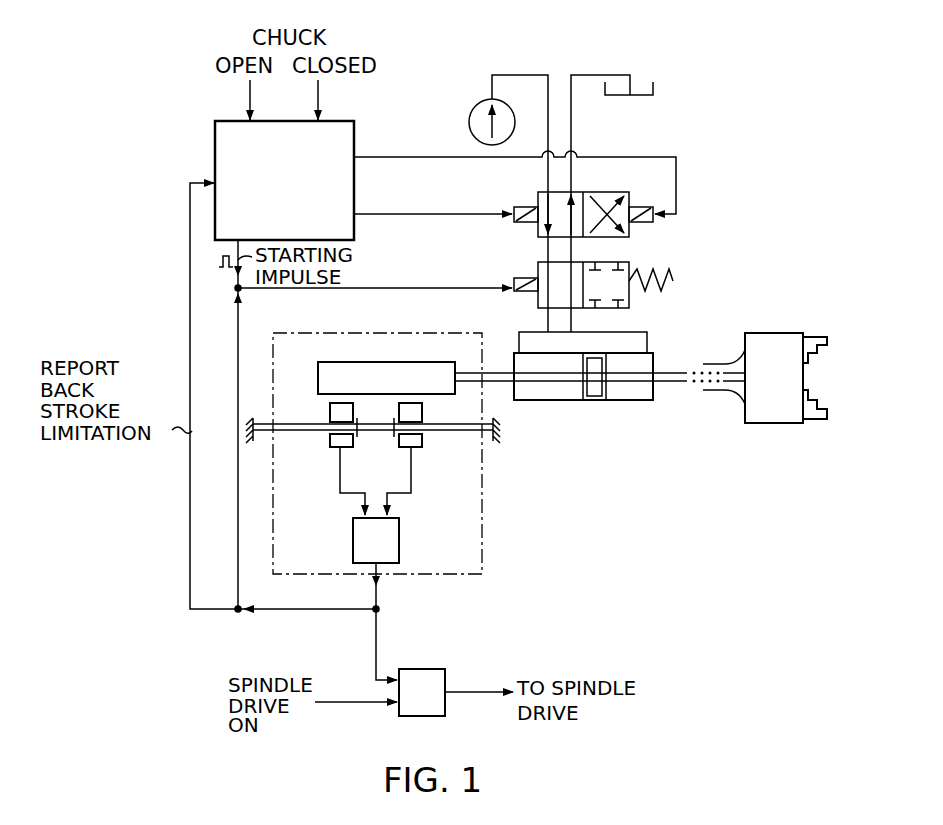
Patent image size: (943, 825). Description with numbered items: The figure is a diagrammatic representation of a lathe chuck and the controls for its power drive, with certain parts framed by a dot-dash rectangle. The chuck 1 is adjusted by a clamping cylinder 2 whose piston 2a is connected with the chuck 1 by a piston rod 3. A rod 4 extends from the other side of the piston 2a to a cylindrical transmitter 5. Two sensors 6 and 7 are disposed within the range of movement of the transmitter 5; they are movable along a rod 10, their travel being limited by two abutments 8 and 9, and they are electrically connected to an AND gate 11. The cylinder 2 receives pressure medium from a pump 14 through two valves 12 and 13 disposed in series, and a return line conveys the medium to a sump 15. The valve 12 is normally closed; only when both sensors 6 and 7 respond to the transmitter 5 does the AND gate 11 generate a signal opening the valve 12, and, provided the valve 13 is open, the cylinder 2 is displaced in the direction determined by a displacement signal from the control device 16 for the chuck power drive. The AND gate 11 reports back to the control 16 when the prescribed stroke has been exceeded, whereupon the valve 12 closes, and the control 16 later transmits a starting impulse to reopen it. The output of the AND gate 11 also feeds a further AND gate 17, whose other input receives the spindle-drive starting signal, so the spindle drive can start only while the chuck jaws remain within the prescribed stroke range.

The chuck 1 is at (775, 340).
The clamping cylinder 2 is at (613, 401).
The piston 2a is at (590, 397).
The piston rod 3 is at (670, 382).
The rod 4 is at (500, 372).
The cylindrical transmitter 5 is at (437, 365).
The sensor 6 is at (330, 411).
The sensor 7 is at (422, 412).
The abutment 8 is at (354, 437).
The abutment 9 is at (393, 437).
The rod 10 is at (292, 432).
The AND gate 11 is at (399, 536).
The valve 12 is at (629, 296).
The valve 13 is at (612, 192).
The pump 14 is at (469, 122).
The sump 15 is at (653, 90).
The control device 16 is at (354, 184).
The further AND gate 17 is at (421, 668).